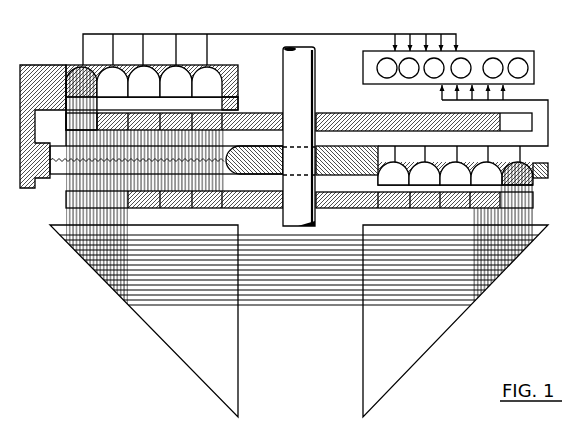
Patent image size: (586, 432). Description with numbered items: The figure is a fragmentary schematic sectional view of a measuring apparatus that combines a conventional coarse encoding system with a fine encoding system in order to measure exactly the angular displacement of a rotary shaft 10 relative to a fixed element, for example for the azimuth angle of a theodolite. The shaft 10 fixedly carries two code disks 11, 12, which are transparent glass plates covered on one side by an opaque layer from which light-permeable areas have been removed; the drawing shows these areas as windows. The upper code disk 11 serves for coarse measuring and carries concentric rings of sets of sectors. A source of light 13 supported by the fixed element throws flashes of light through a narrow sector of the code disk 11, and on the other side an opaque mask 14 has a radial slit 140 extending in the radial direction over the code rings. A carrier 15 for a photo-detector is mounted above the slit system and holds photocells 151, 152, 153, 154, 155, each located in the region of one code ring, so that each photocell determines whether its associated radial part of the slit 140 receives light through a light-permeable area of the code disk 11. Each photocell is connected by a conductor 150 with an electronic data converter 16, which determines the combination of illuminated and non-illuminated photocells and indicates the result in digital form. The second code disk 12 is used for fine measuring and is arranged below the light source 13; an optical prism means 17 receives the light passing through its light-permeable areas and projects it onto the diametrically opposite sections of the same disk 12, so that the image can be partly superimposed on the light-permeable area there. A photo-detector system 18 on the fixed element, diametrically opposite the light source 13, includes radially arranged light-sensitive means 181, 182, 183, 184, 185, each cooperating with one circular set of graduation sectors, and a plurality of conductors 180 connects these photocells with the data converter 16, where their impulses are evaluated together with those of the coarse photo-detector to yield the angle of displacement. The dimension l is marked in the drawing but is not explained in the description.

The rotary shaft 10 is at (299, 136).
The code disk 11 is at (335, 119).
The code disk 12 is at (328, 196).
The source of light 13 is at (62, 167).
The opaque mask 14 is at (56, 100).
The carrier 15 is at (238, 77).
The electronic data converter 16 is at (534, 68).
The optical prism means 17 is at (361, 384).
The photo-detector system 18 is at (548, 172).
The radial slit 140 is at (216, 103).
The conductor 150 is at (291, 34).
The conductors 180 is at (548, 104).
The photocell 151 is at (207, 82).
The photocell 152 is at (176, 81).
The photocell 153 is at (144, 81).
The photocell 154 is at (112, 82).
The photocell 155 is at (81, 98).
The light-sensitive means 181 is at (393, 173).
The light-sensitive means 182 is at (424, 173).
The light-sensitive means 183 is at (455, 173).
The light-sensitive means 184 is at (486, 173).
The light-sensitive means 185 is at (517, 173).
The length l is at (270, 262).